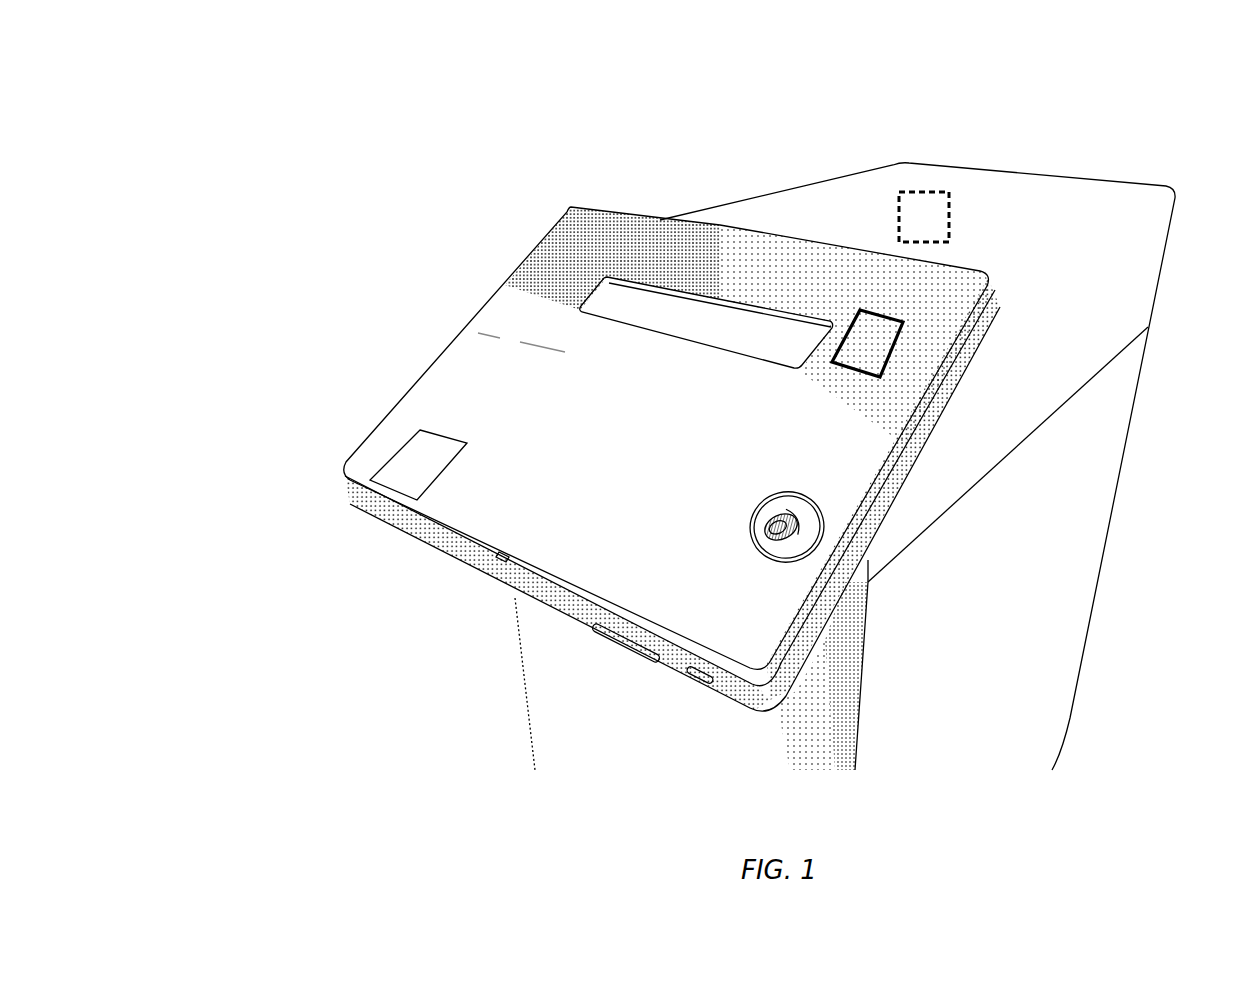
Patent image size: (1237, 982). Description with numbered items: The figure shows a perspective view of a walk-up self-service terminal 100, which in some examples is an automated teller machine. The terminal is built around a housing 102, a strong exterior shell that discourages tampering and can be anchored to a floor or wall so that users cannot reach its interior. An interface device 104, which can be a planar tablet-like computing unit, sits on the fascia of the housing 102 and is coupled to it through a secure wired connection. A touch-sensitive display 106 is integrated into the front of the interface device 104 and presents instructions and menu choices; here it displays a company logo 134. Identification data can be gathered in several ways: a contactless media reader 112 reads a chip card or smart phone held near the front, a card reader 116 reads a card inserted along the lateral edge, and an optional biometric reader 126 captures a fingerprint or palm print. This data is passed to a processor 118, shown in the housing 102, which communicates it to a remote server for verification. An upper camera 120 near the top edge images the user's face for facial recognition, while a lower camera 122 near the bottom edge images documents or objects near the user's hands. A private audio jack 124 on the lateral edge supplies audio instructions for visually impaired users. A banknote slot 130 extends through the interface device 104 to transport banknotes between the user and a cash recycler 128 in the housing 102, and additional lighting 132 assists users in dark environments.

The self-service terminal 100 is at (268, 112).
The housing 102 is at (1002, 190).
The interface device 104 is at (623, 230).
The touch-sensitive display 106 is at (512, 432).
The contactless media reader 112 is at (834, 507).
The card reader 116 is at (624, 640).
The processor 118 is at (921, 191).
The upper camera 120 is at (658, 352).
The lower camera 122 is at (503, 555).
The audio jack 124 is at (724, 684).
The biometric reader 126 is at (893, 350).
The cash recycler 128 is at (1040, 345).
The banknote slot 130 is at (648, 308).
The lighting 132 is at (617, 702).
The company logo 134 is at (413, 482).